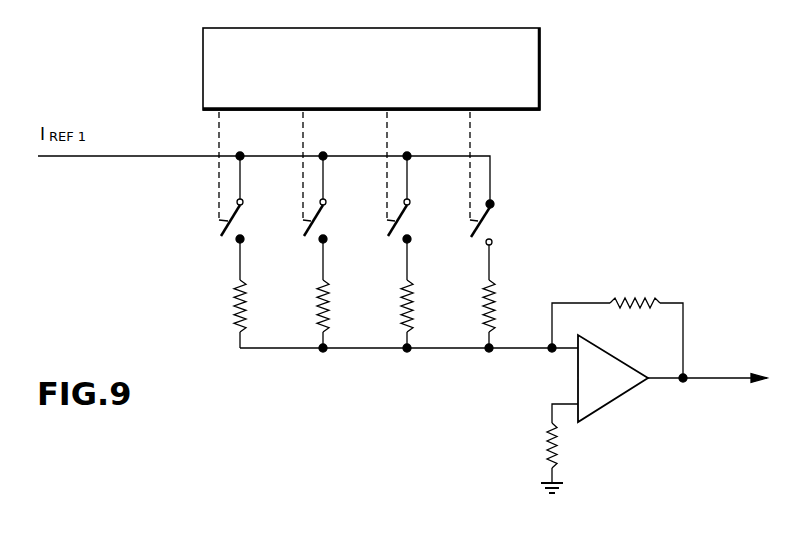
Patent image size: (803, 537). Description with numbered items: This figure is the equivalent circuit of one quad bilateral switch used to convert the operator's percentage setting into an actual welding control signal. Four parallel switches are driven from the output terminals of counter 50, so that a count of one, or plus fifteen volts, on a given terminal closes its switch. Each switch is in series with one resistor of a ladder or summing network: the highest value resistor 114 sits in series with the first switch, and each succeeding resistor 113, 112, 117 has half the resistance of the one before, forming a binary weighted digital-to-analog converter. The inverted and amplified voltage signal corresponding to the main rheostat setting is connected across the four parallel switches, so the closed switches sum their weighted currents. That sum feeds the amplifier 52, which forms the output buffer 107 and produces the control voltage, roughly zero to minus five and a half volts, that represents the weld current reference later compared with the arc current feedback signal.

The counter 50 is at (371, 69).
The resistor 114 is at (234, 295).
The resistor 113 is at (322, 295).
The resistor 112 is at (402, 295).
The resistor 117 is at (486, 296).
The amplifier 52 is at (613, 378).
The output buffer 107 is at (654, 398).